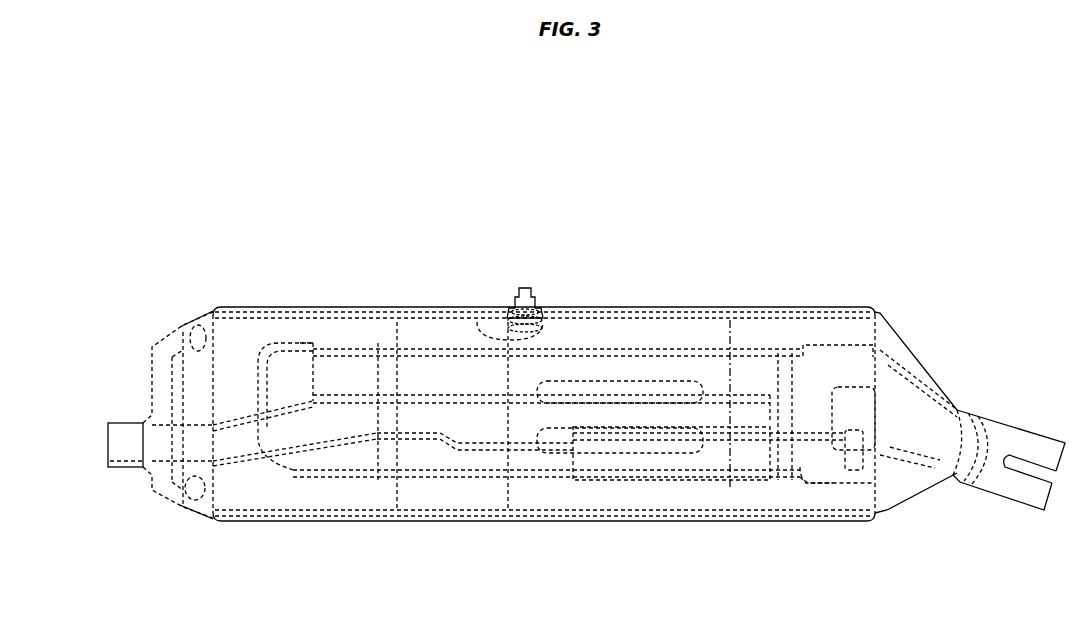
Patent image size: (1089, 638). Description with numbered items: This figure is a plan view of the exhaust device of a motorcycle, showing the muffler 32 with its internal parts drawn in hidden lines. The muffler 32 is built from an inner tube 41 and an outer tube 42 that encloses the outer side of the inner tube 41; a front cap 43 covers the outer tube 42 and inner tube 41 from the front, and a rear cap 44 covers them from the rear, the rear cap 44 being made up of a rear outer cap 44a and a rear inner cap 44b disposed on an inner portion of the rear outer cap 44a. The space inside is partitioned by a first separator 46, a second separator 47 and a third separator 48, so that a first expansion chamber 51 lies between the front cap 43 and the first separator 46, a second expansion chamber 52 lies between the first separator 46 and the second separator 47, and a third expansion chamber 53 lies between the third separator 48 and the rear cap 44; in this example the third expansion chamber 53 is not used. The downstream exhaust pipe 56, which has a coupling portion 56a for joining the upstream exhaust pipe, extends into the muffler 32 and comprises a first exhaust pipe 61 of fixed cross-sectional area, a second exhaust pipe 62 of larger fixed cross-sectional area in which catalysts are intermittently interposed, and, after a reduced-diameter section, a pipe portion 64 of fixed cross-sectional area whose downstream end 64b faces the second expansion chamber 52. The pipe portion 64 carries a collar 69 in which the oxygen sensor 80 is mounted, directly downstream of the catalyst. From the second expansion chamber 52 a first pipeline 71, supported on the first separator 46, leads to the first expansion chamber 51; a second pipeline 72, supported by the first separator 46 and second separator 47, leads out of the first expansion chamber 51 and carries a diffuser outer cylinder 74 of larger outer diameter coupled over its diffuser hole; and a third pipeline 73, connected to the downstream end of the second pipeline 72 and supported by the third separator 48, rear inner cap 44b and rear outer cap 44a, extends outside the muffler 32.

The muffler 32 is at (544, 269).
The inner tube 41 is at (653, 314).
The outer tube 42 is at (681, 305).
The front cap 43 is at (905, 360).
The rear cap 44 is at (103, 272).
The rear outer cap 44a is at (205, 320).
The rear inner cap 44b is at (198, 332).
The first separator 46 is at (740, 337).
The second separator 47 is at (478, 323).
The third separator 48 is at (405, 328).
The first expansion chamber 51 is at (820, 338).
The second expansion chamber 52 is at (593, 340).
The third expansion chamber 53 is at (313, 337).
The downstream exhaust pipe 56 is at (952, 447).
The tail pipe slit 56a is at (1000, 488).
The first exhaust pipe 61 is at (860, 465).
The second exhaust pipe 62 is at (582, 477).
The pipe portion 64 is at (618, 347).
The downstream end 64b is at (640, 365).
The collar 69 is at (568, 324).
The first pipeline 71 is at (820, 473).
The second pipeline 72 is at (477, 453).
The third pipeline 73 is at (250, 460).
The diffuser outer cylinder 74 is at (673, 383).
The oxygen sensor 80 is at (529, 292).